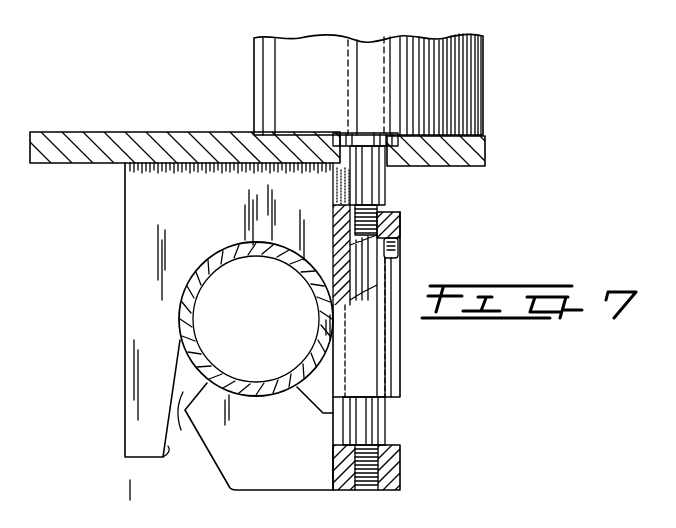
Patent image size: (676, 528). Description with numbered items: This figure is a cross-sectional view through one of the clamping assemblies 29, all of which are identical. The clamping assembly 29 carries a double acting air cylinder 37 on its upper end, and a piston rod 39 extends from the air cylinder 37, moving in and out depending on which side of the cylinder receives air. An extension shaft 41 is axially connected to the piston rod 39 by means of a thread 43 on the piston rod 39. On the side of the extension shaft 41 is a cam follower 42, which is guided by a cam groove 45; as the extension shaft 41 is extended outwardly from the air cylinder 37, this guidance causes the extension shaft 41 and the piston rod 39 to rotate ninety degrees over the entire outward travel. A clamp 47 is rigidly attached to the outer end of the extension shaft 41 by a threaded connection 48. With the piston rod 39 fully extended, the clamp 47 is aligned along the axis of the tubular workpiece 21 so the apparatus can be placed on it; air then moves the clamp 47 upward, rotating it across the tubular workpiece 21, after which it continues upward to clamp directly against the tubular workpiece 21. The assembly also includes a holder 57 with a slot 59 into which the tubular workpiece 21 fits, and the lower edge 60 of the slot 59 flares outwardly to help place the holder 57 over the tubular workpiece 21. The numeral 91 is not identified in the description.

The clamping assembly 29 is at (504, 33).
The double acting air cylinder 37 is at (482, 112).
The piston rod 39 is at (386, 190).
The thread 43 is at (396, 213).
The cam follower 42 is at (399, 247).
The cam groove 45 is at (399, 268).
The extension shaft 41 is at (386, 421).
The threaded connection 48 is at (360, 484).
The holder 57 is at (133, 220).
The tubular workpiece 21 is at (227, 366).
The slot 59 is at (190, 422).
The lower edge 60 is at (340, 410).
The clamp 47 is at (274, 484).
The base 91 is at (134, 523).